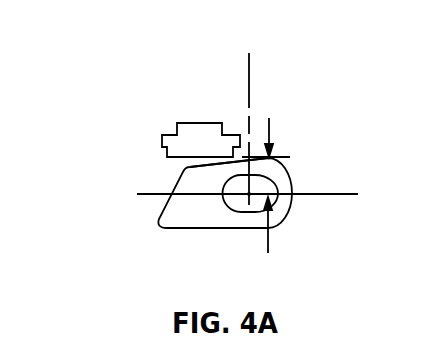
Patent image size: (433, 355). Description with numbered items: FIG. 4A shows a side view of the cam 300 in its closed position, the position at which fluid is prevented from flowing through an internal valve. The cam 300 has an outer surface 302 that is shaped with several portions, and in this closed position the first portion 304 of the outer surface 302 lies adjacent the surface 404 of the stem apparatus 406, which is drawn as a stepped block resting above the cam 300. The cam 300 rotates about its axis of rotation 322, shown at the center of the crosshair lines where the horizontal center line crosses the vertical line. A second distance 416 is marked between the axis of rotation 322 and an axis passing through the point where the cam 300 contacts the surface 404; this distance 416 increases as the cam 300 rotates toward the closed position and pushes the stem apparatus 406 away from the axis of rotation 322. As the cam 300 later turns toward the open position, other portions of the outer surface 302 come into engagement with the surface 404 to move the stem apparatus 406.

The cam 300 is at (192, 220).
The outer surface 302 is at (285, 218).
The first portion 304 is at (190, 167).
The axis of rotation 322 is at (252, 192).
The surface 404 is at (210, 157).
The stem apparatus 406 is at (165, 58).
The second distance 416 is at (270, 130).